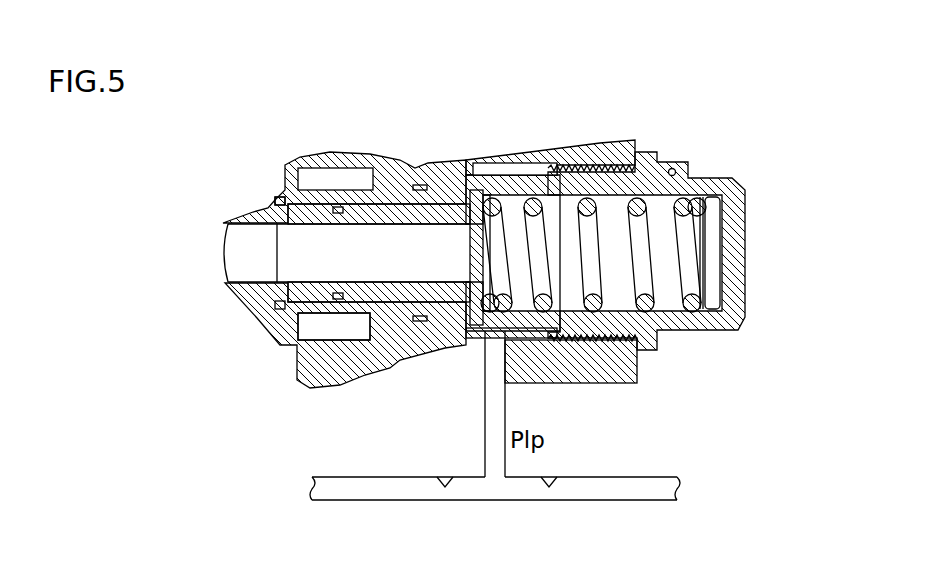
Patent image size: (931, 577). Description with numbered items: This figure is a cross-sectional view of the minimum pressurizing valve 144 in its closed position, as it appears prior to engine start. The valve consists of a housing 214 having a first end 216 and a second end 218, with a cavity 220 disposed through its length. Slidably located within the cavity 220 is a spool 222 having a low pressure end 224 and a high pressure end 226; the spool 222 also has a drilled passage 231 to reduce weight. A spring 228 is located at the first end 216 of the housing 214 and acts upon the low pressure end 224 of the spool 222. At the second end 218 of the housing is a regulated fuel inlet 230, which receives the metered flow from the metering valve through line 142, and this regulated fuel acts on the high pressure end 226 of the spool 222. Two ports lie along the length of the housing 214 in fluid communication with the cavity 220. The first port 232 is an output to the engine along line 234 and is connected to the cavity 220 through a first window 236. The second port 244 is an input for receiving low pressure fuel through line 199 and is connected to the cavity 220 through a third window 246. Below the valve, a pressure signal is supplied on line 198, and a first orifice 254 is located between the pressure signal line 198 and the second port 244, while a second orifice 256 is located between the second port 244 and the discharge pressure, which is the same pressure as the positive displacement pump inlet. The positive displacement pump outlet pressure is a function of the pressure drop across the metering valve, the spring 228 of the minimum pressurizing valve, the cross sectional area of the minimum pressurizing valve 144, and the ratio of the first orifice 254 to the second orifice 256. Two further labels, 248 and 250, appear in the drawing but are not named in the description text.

The line 142 is at (253, 240).
The minimum pressurizing valve 144 is at (708, 131).
The line 198 is at (394, 494).
The line 199 is at (500, 417).
The housing 214 is at (588, 160).
The first end 216 is at (760, 259).
The second end 218 is at (215, 216).
The cavity 220 is at (552, 198).
The spool 222 is at (262, 256).
The low pressure end 224 is at (495, 214).
The high pressure end 226 is at (257, 287).
The spring 228 is at (658, 300).
The regulated fuel inlet 230 is at (262, 210).
The drilled passage 231 is at (465, 252).
The first port 232 is at (313, 333).
The line 234 is at (308, 347).
The first window 236 is at (320, 374).
The second port 244 is at (512, 360).
The third window 246 is at (494, 340).
The bore 248 is at (310, 272).
The piston 250 is at (447, 300).
The first orifice 254 is at (442, 476).
The second orifice 256 is at (553, 476).